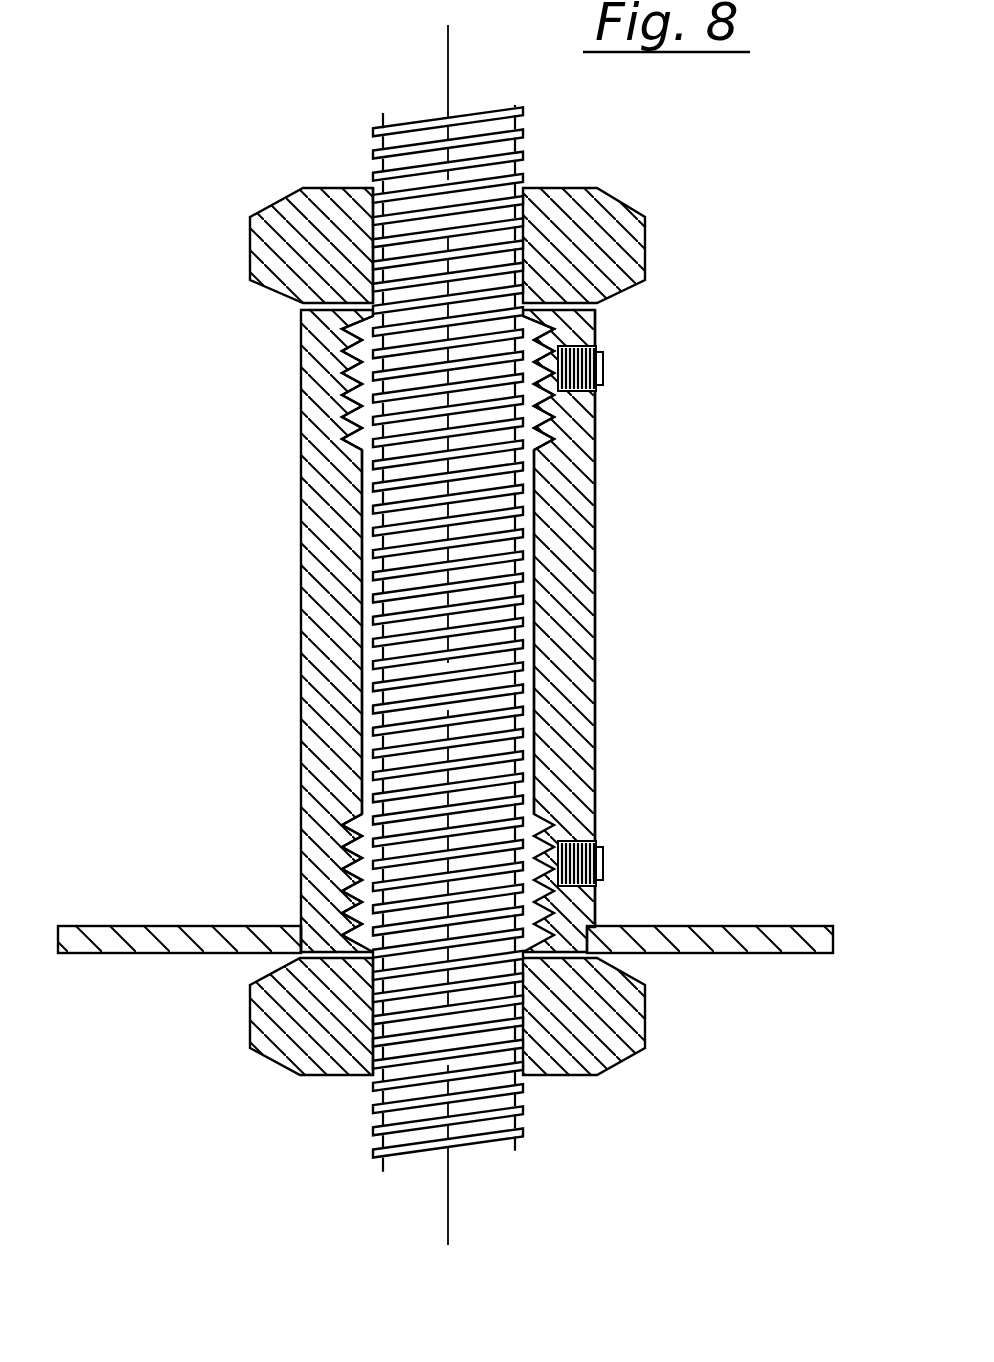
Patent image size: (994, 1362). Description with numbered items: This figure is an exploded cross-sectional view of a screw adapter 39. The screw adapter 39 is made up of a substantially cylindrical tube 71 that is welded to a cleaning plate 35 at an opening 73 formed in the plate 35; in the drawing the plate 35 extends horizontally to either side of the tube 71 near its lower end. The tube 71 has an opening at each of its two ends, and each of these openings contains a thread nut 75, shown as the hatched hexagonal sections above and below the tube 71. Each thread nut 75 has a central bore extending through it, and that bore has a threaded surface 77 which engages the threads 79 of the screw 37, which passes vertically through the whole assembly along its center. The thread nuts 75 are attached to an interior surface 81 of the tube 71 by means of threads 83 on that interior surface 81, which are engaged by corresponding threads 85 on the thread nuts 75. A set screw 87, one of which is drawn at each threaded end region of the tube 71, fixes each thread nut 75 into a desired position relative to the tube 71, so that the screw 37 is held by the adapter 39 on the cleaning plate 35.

The cleaning plate 35 is at (738, 957).
The screw 37 is at (517, 167).
The screw adapter 39 is at (600, 600).
The tube 71 is at (302, 588).
The opening 73 is at (310, 940).
The thread nut 75 is at (646, 250).
The threaded surface 77 is at (373, 254).
The threads 79 is at (373, 173).
The interior surface 81 is at (362, 540).
The threads 83 is at (335, 347).
The threads 85 is at (345, 345).
The set screw 87 is at (603, 362).